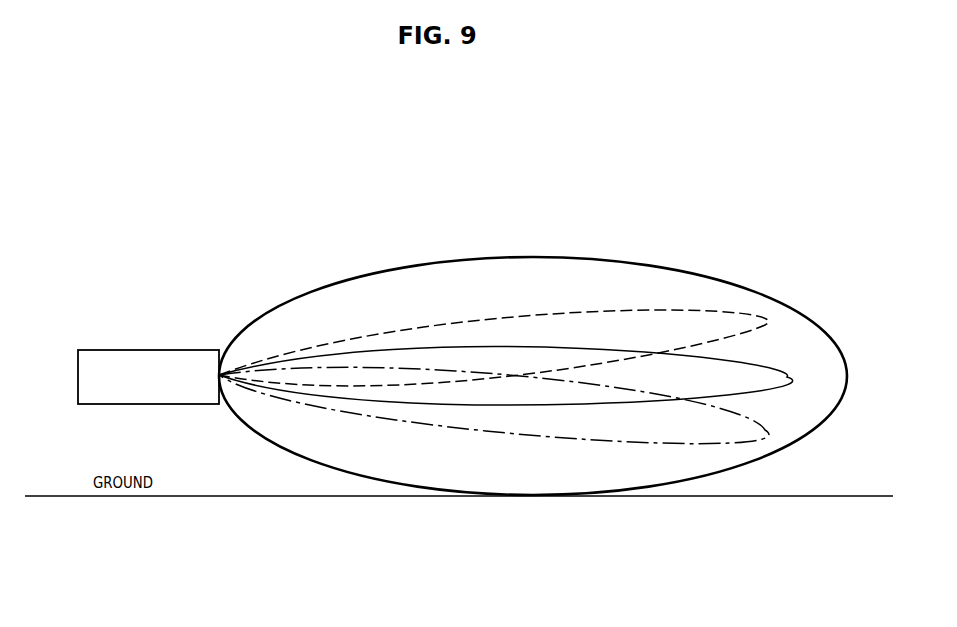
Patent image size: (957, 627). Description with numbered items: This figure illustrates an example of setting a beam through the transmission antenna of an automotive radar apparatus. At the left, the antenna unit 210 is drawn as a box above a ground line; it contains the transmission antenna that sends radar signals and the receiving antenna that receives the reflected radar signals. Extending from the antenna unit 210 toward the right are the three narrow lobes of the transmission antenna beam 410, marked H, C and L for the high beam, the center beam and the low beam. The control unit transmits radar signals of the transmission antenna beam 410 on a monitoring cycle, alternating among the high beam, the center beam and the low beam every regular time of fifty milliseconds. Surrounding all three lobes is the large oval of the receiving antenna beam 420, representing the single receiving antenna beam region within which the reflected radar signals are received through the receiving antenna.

The antenna unit 210 is at (147, 343).
The transmission (Tx) antenna beam 410 is at (694, 336).
The receiving (Rx) antenna beam 420 is at (346, 268).